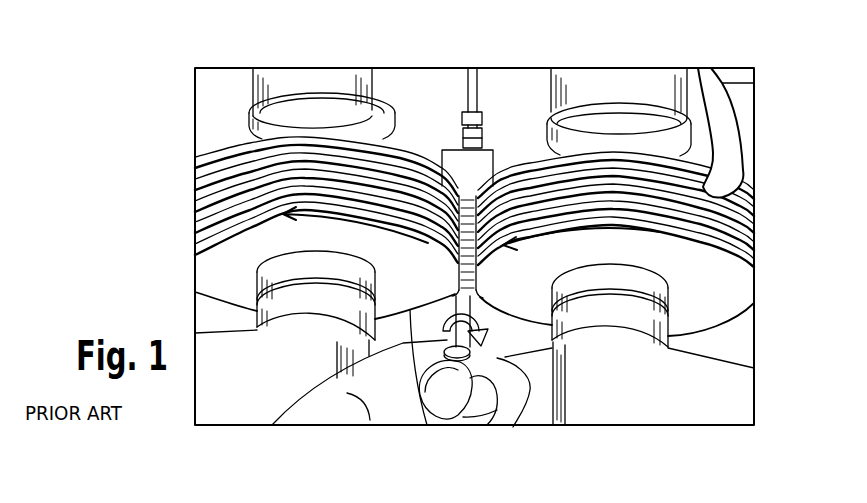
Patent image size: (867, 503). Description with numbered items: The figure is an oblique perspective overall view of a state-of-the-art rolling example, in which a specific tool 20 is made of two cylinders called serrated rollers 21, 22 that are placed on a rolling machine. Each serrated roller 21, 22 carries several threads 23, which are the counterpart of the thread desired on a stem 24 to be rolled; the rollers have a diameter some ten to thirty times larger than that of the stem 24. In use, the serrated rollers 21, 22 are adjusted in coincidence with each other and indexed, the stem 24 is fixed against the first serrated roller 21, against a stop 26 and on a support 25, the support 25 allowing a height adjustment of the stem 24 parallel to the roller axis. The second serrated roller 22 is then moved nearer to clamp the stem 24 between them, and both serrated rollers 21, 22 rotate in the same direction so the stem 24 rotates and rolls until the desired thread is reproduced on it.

The tool 20 is at (499, 57).
The first serrated roller 21 is at (172, 226).
The second serrated roller 22 is at (776, 248).
The threads 23 is at (311, 150).
The stem 24 is at (427, 425).
The support 25 is at (503, 313).
The stop 26 is at (460, 107).